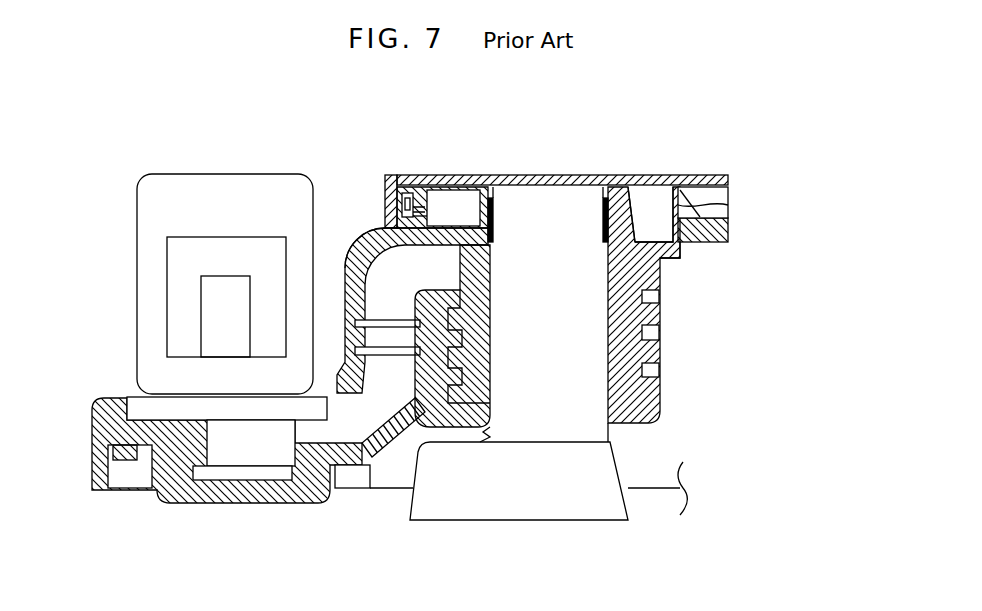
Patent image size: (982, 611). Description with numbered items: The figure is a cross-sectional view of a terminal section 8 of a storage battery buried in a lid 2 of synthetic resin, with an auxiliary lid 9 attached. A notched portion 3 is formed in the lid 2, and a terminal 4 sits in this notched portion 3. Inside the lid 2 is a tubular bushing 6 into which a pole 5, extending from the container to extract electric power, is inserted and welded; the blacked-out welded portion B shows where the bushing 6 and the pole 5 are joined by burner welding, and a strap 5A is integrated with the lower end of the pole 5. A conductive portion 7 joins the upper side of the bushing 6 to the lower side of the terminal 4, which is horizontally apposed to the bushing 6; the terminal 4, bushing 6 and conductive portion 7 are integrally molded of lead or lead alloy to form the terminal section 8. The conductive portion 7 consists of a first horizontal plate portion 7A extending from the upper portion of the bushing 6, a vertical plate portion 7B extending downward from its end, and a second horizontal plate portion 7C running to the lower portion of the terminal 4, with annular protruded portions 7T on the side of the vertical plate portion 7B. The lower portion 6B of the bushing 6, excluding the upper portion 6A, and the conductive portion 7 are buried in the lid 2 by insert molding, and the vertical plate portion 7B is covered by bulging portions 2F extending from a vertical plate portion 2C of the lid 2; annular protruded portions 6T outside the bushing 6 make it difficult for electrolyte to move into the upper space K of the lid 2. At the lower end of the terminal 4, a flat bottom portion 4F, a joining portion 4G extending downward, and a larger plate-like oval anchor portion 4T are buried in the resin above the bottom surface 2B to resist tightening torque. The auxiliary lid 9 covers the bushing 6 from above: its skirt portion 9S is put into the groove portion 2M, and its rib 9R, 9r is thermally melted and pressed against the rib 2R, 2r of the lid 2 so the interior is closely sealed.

The lid 2 is at (707, 237).
The bottom surface 2B is at (115, 450).
The vertical plate portion 2C is at (400, 176).
The bulging portion 2F is at (355, 258).
The groove portion 2M is at (413, 219).
The rib 2R is at (400, 228).
The rib 2r is at (715, 207).
The notched portion 3 is at (338, 188).
The terminal 4 is at (137, 196).
The bottom portion 4F is at (170, 407).
The joining portion 4G is at (232, 453).
The anchor portion 4T is at (244, 475).
The pole 5 is at (548, 215).
The strap 5A is at (523, 498).
The bushing 6 is at (605, 190).
The upper portion 6A is at (630, 186).
The lower portion 6B is at (677, 248).
The protruded portion 6T is at (655, 390).
The conductive portion 7 is at (383, 233).
The horizontal plate portion 7A is at (445, 262).
The vertical plate portion 7B is at (392, 280).
The horizontal plate portion 7C is at (340, 430).
The protruded portion 7T is at (383, 335).
The terminal section 8 is at (240, 152).
The auxiliary lid 9 is at (703, 175).
The rib 9R is at (402, 196).
The skirt portion 9S is at (404, 205).
The rib 9r is at (720, 195).
The welded portion B is at (495, 230).
The space K is at (647, 203).